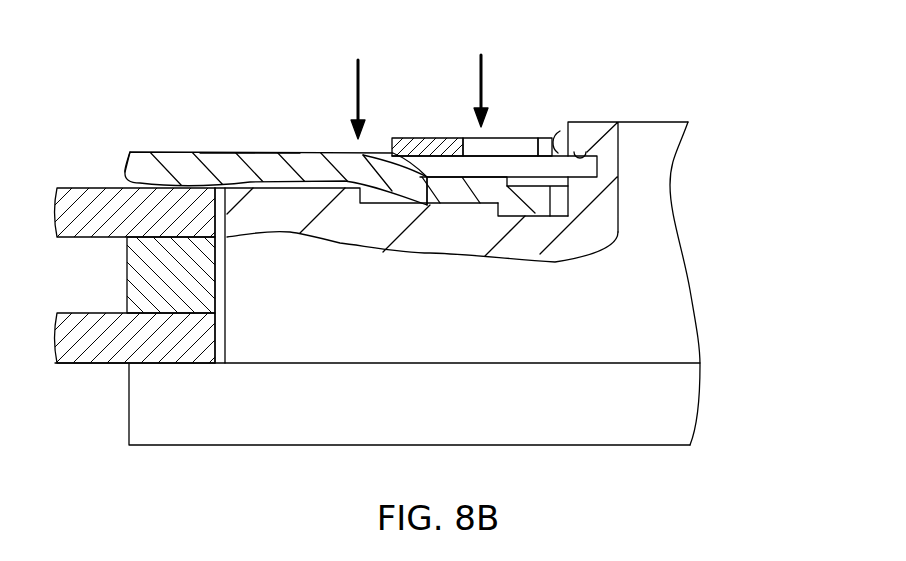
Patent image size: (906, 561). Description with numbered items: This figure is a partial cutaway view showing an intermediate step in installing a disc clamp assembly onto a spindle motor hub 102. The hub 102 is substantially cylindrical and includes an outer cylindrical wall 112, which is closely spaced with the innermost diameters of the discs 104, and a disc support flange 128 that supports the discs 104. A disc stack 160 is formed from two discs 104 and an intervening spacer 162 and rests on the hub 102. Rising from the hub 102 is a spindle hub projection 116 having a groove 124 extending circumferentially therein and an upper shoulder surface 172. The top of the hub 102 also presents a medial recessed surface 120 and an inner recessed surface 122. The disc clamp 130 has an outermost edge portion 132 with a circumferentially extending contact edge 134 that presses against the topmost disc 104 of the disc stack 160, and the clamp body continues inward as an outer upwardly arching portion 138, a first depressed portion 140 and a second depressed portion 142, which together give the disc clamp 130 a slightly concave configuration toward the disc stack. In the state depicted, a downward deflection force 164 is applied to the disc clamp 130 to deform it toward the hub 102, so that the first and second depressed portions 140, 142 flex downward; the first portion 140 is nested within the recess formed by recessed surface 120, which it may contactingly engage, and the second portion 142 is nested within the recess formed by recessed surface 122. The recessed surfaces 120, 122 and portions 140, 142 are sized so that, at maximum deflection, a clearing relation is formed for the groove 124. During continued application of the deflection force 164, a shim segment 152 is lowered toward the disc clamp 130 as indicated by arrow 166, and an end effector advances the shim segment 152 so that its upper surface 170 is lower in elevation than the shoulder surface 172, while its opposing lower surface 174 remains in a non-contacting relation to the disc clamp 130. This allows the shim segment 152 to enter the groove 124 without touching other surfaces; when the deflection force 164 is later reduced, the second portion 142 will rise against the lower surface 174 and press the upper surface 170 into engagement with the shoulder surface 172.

The spindle motor hub 102 is at (681, 278).
The disc 104 is at (85, 188).
The outer cylindrical wall 112 is at (657, 318).
The spindle hub projection 116 is at (655, 121).
The medial recessed surface 120 is at (372, 212).
The inner recessed surface 122 is at (497, 216).
The groove 124 is at (598, 167).
The disc support flange 128 is at (336, 362).
The disc clamp 130 is at (222, 143).
The outermost edge portion 132 is at (155, 152).
The contact edge 134 is at (233, 192).
The outer upwardly arching portion 138 is at (251, 152).
The first depressed portion 140 is at (450, 192).
The second depressed portion 142 is at (543, 202).
The shim segment 152 is at (515, 136).
The disc stack 160 is at (95, 173).
The spacer 162 is at (130, 275).
The downward deflection force 164 is at (352, 92).
The arrow indicating lowering of shim segment 166 is at (470, 86).
The upper surface of shim segment 170 is at (427, 138).
The upper shoulder surface 172 is at (589, 150).
The lower surface of shim segment 174 is at (422, 212).